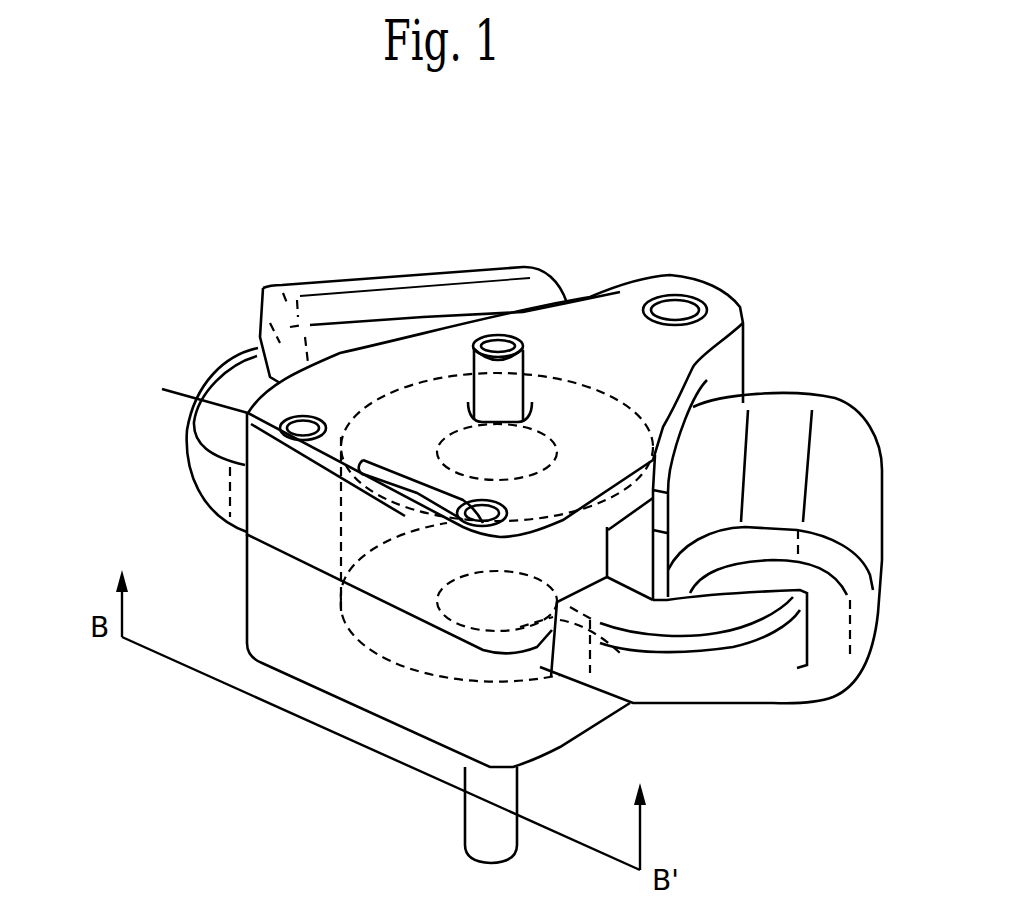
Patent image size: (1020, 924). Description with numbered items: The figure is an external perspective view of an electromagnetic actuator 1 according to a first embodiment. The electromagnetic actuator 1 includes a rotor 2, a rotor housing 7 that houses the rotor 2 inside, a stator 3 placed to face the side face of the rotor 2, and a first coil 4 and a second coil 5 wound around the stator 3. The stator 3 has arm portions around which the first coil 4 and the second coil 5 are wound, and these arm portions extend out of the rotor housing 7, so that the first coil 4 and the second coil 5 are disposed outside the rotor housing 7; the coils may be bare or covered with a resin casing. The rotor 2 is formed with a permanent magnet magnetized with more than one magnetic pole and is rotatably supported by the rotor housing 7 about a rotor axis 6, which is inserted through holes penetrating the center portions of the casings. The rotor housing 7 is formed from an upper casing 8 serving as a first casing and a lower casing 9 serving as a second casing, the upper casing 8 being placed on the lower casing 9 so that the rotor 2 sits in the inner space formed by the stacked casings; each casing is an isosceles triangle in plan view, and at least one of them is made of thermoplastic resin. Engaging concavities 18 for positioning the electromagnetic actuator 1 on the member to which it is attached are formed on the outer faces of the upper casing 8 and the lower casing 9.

The electromagnetic actuator 1 is at (501, 511).
The rotor 2 is at (567, 417).
The stator 3 is at (688, 684).
The first coil 4 is at (423, 290).
The second coil 5 is at (840, 447).
The rotor axis 6 is at (502, 340).
The rotor housing 7 is at (205, 542).
The upper casing 8 is at (323, 392).
The lower casing 9 is at (277, 623).
The engaging concavities 18 is at (675, 310).